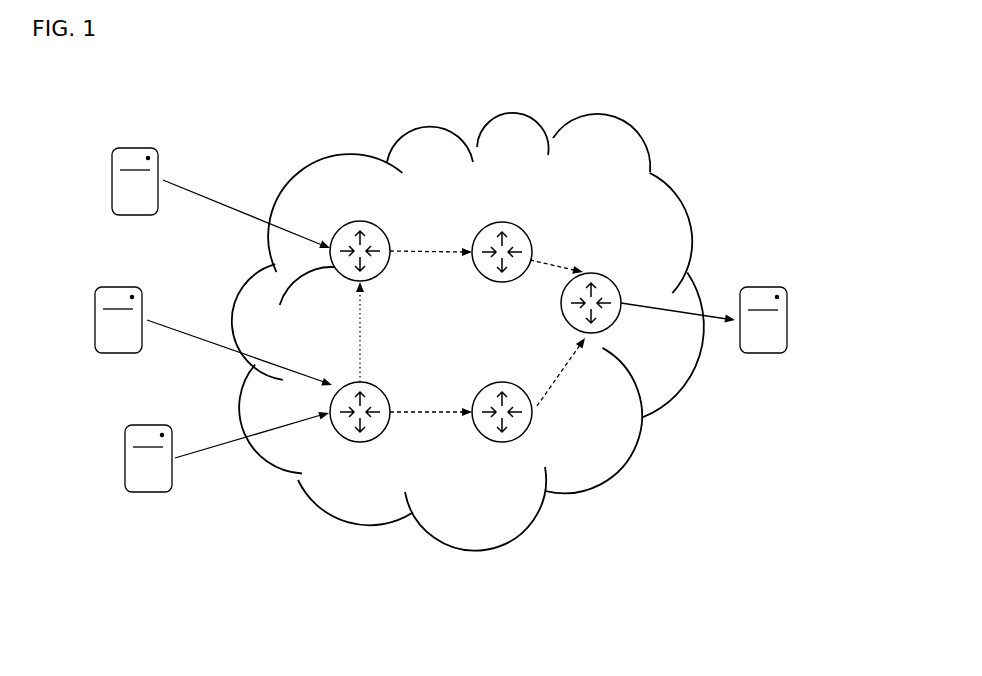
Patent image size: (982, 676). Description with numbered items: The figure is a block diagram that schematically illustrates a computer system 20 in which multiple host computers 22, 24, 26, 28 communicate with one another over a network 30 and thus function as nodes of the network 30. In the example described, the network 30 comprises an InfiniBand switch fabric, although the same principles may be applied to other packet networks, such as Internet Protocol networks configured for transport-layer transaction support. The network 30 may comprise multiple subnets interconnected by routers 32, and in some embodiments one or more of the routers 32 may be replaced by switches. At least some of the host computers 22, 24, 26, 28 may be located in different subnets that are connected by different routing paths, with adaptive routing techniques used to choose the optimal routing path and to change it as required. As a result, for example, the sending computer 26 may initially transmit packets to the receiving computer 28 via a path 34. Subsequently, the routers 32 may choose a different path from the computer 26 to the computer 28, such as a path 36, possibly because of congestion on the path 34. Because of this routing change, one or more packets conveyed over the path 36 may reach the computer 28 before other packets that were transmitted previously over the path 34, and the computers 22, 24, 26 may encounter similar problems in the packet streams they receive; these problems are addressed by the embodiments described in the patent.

The computer system 20 is at (775, 181).
The host computer 22 is at (135, 148).
The host computer 24 is at (95, 318).
The host computer 26 is at (125, 458).
The host computer 28 is at (787, 320).
The network 30 is at (468, 137).
The router 32 is at (353, 381).
The path 34 is at (362, 342).
The path 36 is at (423, 414).